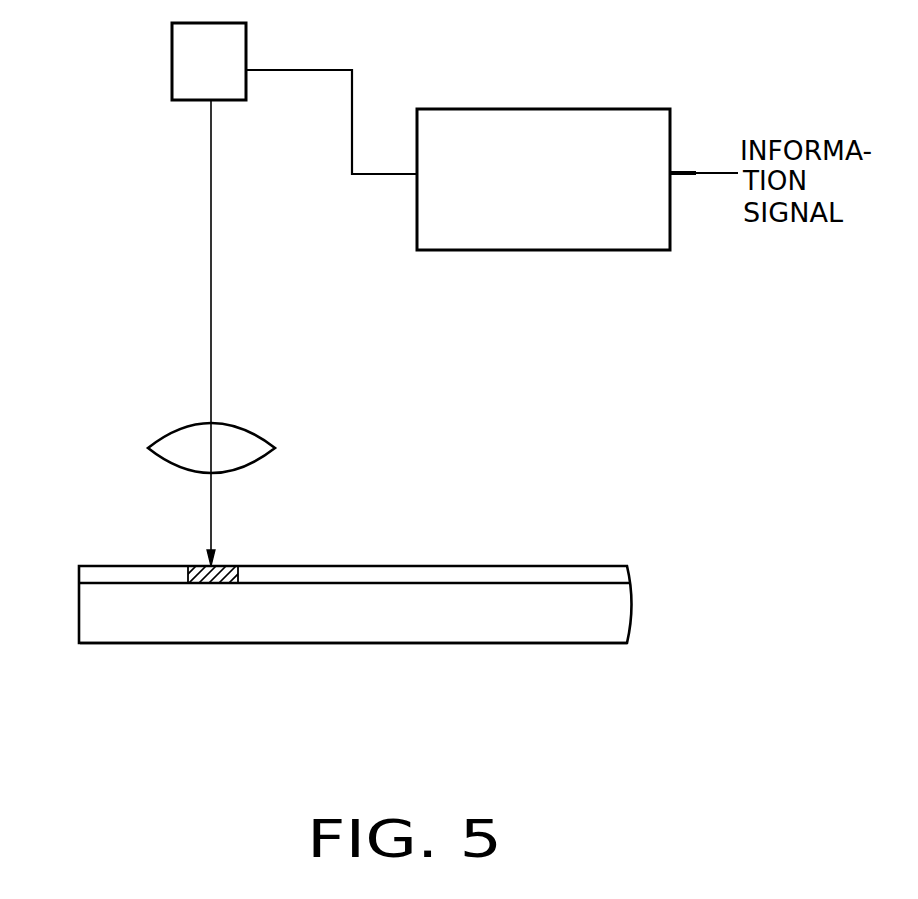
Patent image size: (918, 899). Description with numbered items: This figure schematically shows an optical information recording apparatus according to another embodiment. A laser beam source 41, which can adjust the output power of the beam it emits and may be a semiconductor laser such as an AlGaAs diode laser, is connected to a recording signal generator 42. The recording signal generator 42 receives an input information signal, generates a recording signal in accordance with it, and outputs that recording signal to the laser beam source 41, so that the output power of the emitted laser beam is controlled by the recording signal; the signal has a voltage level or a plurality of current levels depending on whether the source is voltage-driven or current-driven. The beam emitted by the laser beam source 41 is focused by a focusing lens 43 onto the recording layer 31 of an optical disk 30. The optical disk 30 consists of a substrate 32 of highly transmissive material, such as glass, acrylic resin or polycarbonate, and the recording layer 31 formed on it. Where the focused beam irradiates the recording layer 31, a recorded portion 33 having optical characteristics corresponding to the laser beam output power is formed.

The optical disk 30 is at (322, 604).
The recording layer 31 is at (143, 566).
The substrate 32 is at (140, 645).
The recorded portion 33 is at (222, 566).
The laser beam source 41 is at (172, 70).
The recording signal generator 42 is at (478, 109).
The focusing lens 43 is at (258, 434).